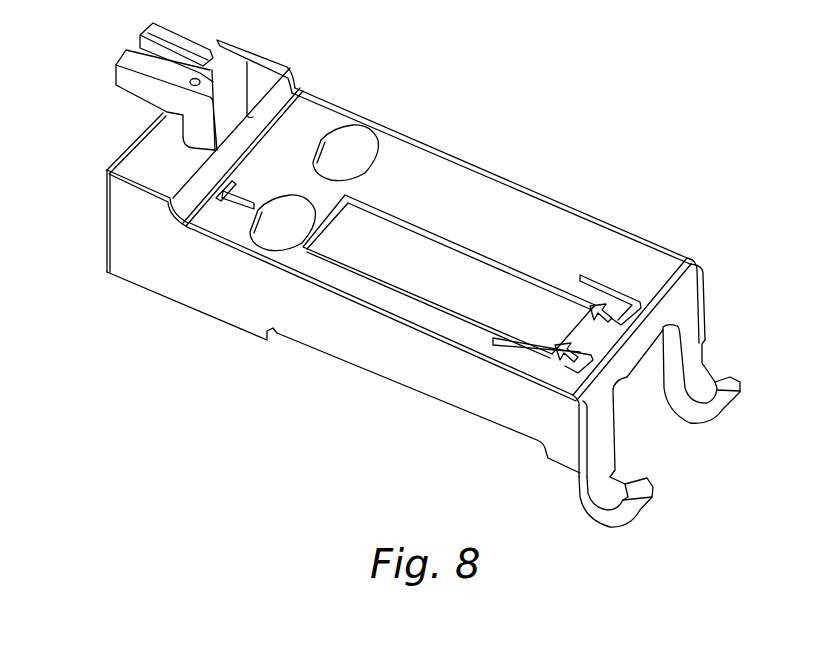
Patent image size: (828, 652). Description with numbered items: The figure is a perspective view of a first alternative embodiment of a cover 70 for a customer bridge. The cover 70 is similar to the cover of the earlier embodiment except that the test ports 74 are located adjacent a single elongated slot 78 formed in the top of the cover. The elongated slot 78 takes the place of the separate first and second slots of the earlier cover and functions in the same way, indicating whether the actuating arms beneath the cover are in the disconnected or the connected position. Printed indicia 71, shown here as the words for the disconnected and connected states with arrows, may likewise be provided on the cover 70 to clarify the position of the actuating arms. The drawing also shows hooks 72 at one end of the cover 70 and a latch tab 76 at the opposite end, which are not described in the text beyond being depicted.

The cover 70 is at (336, 421).
The printed indicia 71 is at (507, 207).
The hook 72 is at (733, 397).
The test ports 74 is at (351, 140).
The latch tab 76 is at (137, 83).
The elongated slot 78 is at (508, 318).